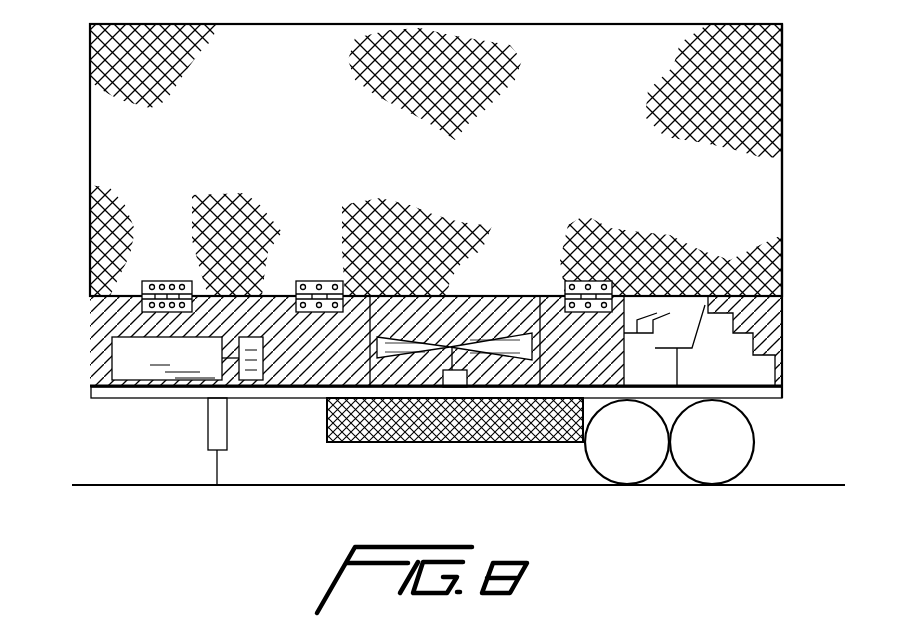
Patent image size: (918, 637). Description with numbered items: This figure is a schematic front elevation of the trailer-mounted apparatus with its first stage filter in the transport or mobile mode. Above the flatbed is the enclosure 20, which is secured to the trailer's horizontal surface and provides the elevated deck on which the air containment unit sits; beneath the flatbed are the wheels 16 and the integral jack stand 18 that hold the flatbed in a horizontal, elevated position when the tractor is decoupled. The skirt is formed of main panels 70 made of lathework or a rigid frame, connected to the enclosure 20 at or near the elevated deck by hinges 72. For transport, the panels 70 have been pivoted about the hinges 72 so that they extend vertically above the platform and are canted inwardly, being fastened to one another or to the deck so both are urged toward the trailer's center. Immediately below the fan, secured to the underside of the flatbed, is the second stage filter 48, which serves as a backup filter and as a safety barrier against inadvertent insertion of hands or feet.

The main panels 70 is at (90, 101).
The hinges 72 is at (298, 304).
The enclosure 20 is at (90, 392).
The jack stand 18 is at (208, 433).
The second stage filter 48 is at (350, 442).
The wheels 16 is at (632, 467).